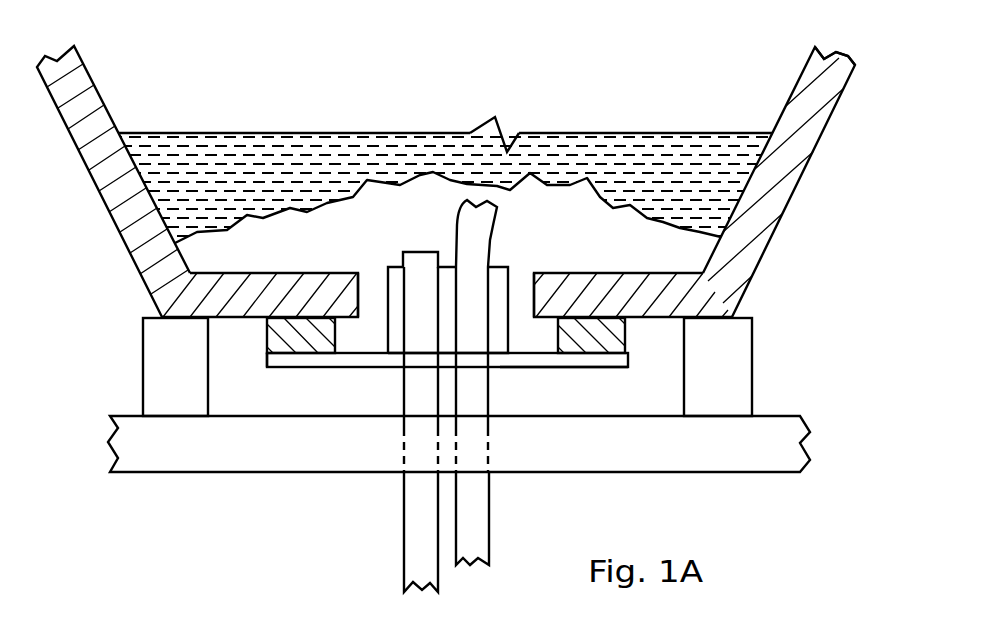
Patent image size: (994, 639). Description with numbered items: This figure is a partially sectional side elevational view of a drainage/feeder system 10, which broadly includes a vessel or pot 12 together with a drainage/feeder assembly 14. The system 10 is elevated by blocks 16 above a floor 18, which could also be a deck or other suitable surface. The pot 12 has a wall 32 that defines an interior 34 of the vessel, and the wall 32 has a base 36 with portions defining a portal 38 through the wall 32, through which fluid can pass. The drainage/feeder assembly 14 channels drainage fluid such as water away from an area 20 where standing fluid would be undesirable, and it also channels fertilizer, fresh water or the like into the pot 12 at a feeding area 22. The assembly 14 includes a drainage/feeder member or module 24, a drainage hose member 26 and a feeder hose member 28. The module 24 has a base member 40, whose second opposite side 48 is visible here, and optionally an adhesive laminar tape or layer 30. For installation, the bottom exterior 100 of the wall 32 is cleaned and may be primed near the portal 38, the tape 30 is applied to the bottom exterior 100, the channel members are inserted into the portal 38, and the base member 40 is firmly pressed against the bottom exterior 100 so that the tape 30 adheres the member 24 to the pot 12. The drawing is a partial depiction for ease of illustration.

The drainage/feeder system 10 is at (459, 167).
The vessel or pot 12 is at (808, 193).
The drainage/feeder assembly 14 is at (505, 404).
The blocks 16 is at (145, 369).
The floor 18 is at (173, 460).
The area 20 is at (383, 404).
The feeding area 22 is at (435, 187).
The drainage/feeder member or module 24 is at (533, 372).
The drainage hose member 26 is at (390, 539).
The feeder hose member 28 is at (503, 514).
The adhesive laminar tape or layer 30 is at (272, 327).
The wall 32 is at (828, 62).
The interior 34 is at (217, 139).
The base 36 is at (253, 293).
The portal 38 is at (357, 285).
The base member 40 is at (321, 358).
The second opposite side 48 is at (273, 377).
The bottom exterior 100 is at (543, 322).